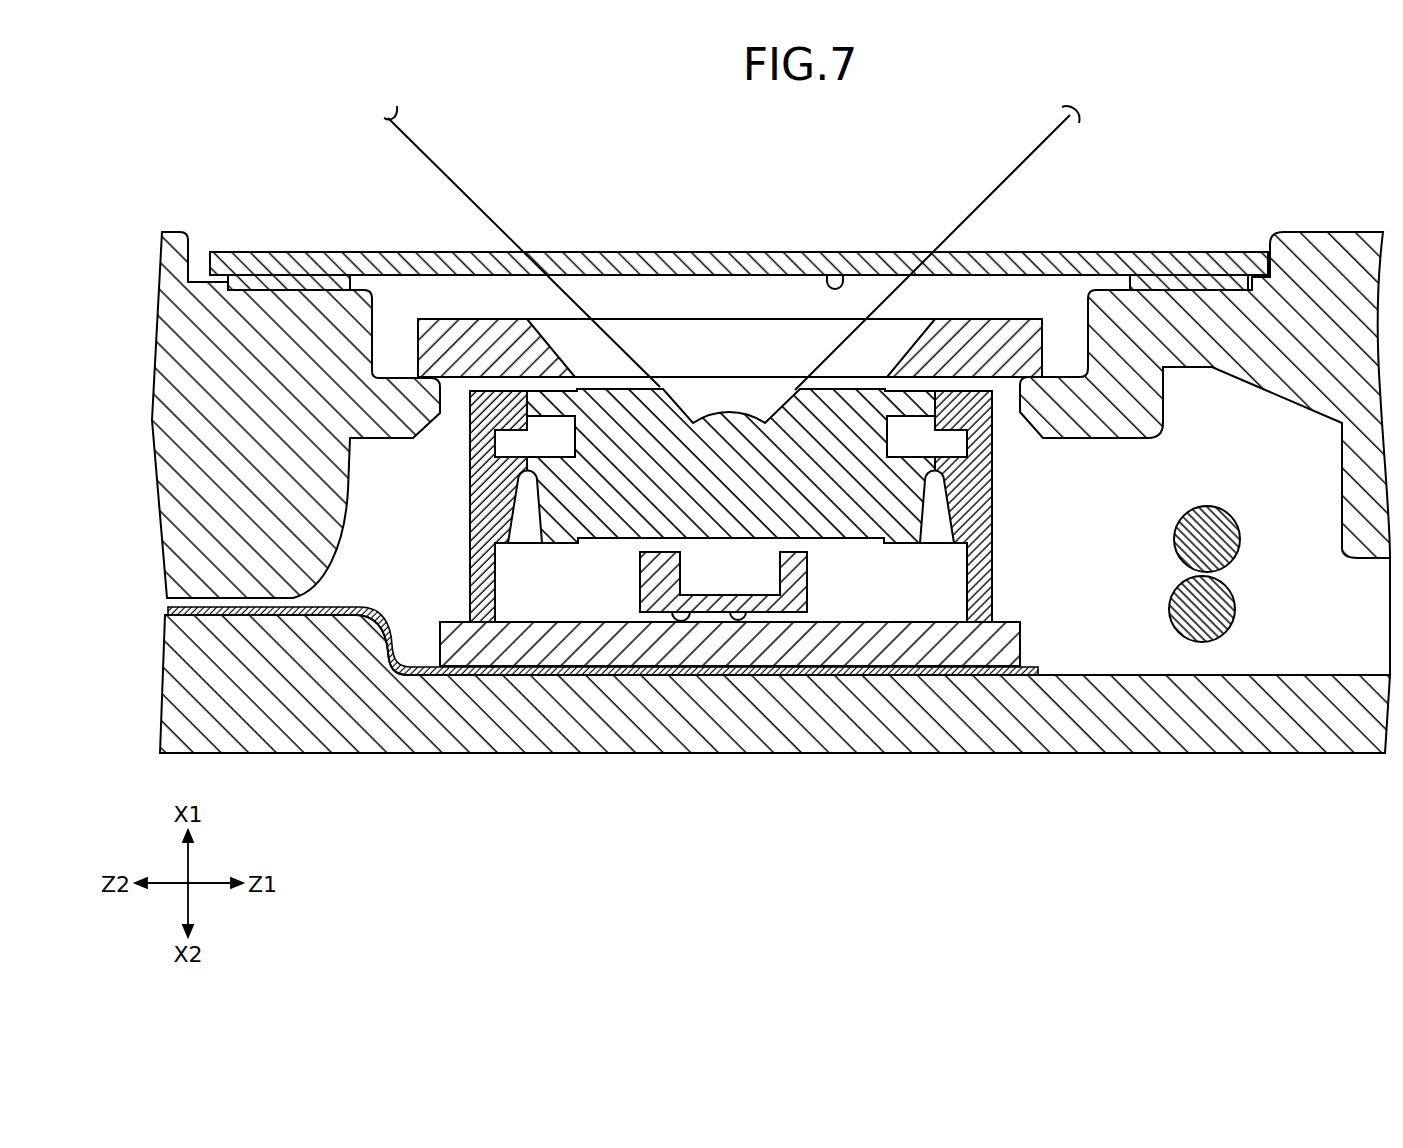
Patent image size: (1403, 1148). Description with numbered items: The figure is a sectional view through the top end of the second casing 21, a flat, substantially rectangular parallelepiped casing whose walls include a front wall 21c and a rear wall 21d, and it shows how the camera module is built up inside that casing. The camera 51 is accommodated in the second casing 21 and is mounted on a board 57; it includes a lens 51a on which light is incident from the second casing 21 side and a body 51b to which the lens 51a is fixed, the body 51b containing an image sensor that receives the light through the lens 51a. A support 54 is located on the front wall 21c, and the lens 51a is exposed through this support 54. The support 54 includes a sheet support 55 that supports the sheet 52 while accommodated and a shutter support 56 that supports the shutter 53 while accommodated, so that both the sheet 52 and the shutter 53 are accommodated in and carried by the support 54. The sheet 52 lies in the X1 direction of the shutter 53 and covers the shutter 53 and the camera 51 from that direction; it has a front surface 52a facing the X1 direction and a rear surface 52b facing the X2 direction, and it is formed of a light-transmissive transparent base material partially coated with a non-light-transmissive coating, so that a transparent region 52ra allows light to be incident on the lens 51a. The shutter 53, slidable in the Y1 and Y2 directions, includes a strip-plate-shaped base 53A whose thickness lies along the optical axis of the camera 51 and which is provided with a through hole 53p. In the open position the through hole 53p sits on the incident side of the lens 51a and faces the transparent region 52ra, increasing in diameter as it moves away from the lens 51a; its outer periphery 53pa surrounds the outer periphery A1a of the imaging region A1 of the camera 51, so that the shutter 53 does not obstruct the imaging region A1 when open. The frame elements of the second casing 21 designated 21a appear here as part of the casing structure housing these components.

The second casing 21 is at (776, 495).
The frame upper wall 21a is at (776, 422).
The front wall 21c is at (1330, 232).
The rear wall 21d is at (1232, 753).
The camera 51 is at (731, 504).
The lens 51a is at (730, 413).
The body 51b is at (572, 545).
The sheet 52 is at (739, 226).
The front surface 52a is at (739, 231).
The transparent region 52ra is at (558, 252).
The rear surface 52b is at (838, 252).
The shutter 53 is at (676, 269).
The base 53A is at (427, 320).
The through hole 53p is at (653, 335).
The outer periphery of the through hole 53pa is at (520, 333).
The support 54 is at (1075, 282).
The sheet support 55 is at (1188, 287).
The shutter support 56 is at (1066, 370).
The board 57 is at (862, 645).
The imaging region A1 is at (731, 248).
The outer periphery of the imaging region A1a is at (1022, 163).